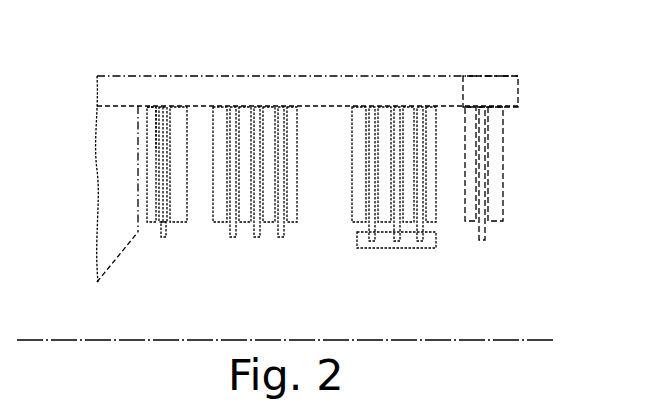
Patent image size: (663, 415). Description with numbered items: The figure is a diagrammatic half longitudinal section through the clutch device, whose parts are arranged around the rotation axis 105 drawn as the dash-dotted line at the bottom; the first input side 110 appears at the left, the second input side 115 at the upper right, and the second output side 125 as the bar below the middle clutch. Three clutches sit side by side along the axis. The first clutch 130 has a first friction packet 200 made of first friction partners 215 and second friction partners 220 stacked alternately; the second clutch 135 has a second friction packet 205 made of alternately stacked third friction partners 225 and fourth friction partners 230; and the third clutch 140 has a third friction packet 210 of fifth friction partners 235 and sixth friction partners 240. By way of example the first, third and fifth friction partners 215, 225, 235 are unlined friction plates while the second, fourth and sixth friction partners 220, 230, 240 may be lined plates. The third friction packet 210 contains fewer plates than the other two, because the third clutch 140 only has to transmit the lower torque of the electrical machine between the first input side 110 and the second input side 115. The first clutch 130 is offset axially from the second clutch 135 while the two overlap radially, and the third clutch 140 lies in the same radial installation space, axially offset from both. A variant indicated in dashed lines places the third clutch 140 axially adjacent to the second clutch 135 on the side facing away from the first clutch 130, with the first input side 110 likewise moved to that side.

The rotation axis 105 is at (553, 339).
The first input side 110 is at (107, 150).
The second input side 115 is at (495, 89).
The second output side 125 is at (407, 240).
The first clutch 130 is at (217, 242).
The second clutch 135 is at (358, 250).
The third clutch 140 is at (146, 242).
The first friction packet 200 is at (272, 252).
The second friction packet 205 is at (423, 266).
The third friction packet 210 is at (163, 94).
The first friction partner 215 is at (247, 127).
The second friction partner 220 is at (285, 231).
The third friction partner 225 is at (410, 126).
The fourth friction partner 230 is at (423, 233).
The fifth friction partner 235 is at (153, 124).
The sixth friction partner 240 is at (163, 232).